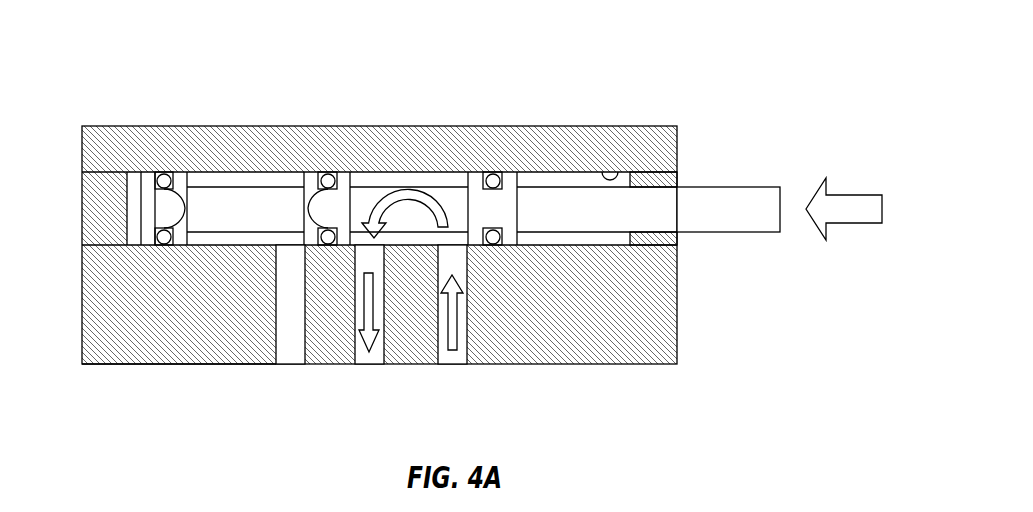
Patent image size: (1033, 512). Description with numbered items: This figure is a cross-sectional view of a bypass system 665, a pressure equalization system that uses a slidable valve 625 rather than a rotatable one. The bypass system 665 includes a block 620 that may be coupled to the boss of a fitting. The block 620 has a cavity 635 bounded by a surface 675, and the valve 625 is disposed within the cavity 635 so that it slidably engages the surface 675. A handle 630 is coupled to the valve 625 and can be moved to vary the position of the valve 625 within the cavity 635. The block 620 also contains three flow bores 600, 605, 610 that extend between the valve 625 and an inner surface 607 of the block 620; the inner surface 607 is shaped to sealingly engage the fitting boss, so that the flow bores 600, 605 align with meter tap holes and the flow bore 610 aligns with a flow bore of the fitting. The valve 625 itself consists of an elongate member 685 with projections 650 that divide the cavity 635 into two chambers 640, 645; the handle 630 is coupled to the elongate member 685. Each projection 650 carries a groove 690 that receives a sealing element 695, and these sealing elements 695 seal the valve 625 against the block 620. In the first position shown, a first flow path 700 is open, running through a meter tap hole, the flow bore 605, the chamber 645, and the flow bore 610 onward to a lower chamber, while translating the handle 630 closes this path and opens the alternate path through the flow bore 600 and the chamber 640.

The bypass system 665 is at (735, 90).
The block 620 is at (677, 322).
The slidable valve 625 is at (432, 154).
The inner surface 607 is at (162, 365).
The flow bore 600 is at (288, 365).
The flow bore 610 is at (373, 365).
The flow bore 605 is at (455, 365).
The first flow path 700 is at (452, 315).
The cavity 635 is at (137, 180).
The projections 650 is at (153, 204).
The groove 690 is at (197, 208).
The chamber 640 is at (245, 193).
The sealing element 695 is at (308, 208).
The chamber 645 is at (453, 193).
The elongate member 685 is at (537, 193).
The surface 675 is at (620, 178).
The handle 630 is at (740, 187).